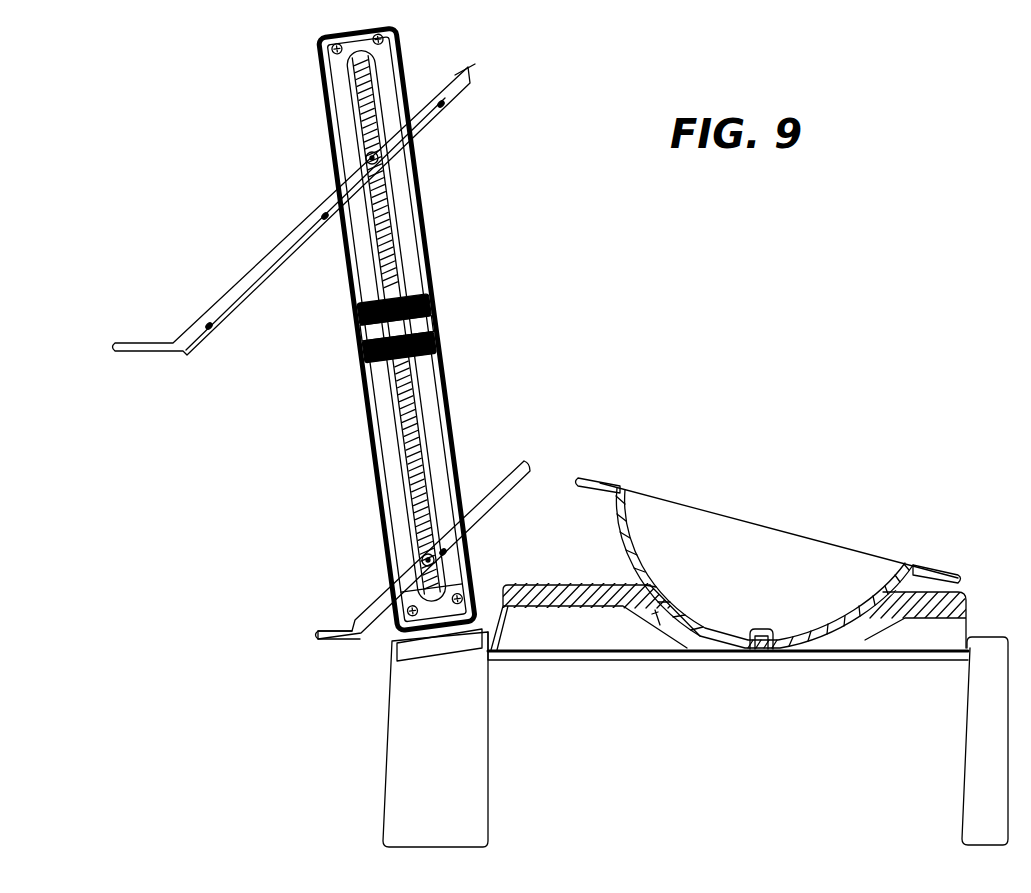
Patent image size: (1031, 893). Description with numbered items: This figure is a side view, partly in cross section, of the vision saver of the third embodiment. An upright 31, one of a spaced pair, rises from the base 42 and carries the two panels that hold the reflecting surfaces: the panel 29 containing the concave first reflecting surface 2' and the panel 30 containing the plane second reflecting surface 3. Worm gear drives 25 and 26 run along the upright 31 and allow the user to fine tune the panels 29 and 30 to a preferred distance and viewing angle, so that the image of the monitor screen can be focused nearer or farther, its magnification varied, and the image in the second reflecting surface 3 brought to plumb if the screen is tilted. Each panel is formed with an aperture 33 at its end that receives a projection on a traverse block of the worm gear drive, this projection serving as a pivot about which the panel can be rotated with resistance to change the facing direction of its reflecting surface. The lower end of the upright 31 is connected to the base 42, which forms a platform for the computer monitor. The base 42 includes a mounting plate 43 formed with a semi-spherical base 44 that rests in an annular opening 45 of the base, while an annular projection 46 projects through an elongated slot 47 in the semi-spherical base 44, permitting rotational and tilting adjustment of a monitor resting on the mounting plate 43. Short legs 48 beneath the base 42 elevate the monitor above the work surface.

The first reflecting surface 2' is at (448, 114).
The second reflecting surface 3 is at (494, 486).
The worm gear drive 25 is at (366, 258).
The worm gear drive 26 is at (397, 484).
The panel 29 is at (446, 76).
The panel 30 is at (370, 628).
The upright 31 is at (423, 222).
The aperture 33 is at (366, 160).
The base 42 is at (505, 662).
The mounting plate 43 is at (600, 485).
The semi-spherical base 44 is at (620, 546).
The annular opening 45 is at (952, 594).
The annular projection 46 is at (746, 652).
The elongated slot 47 is at (716, 625).
The short legs 48 is at (468, 794).